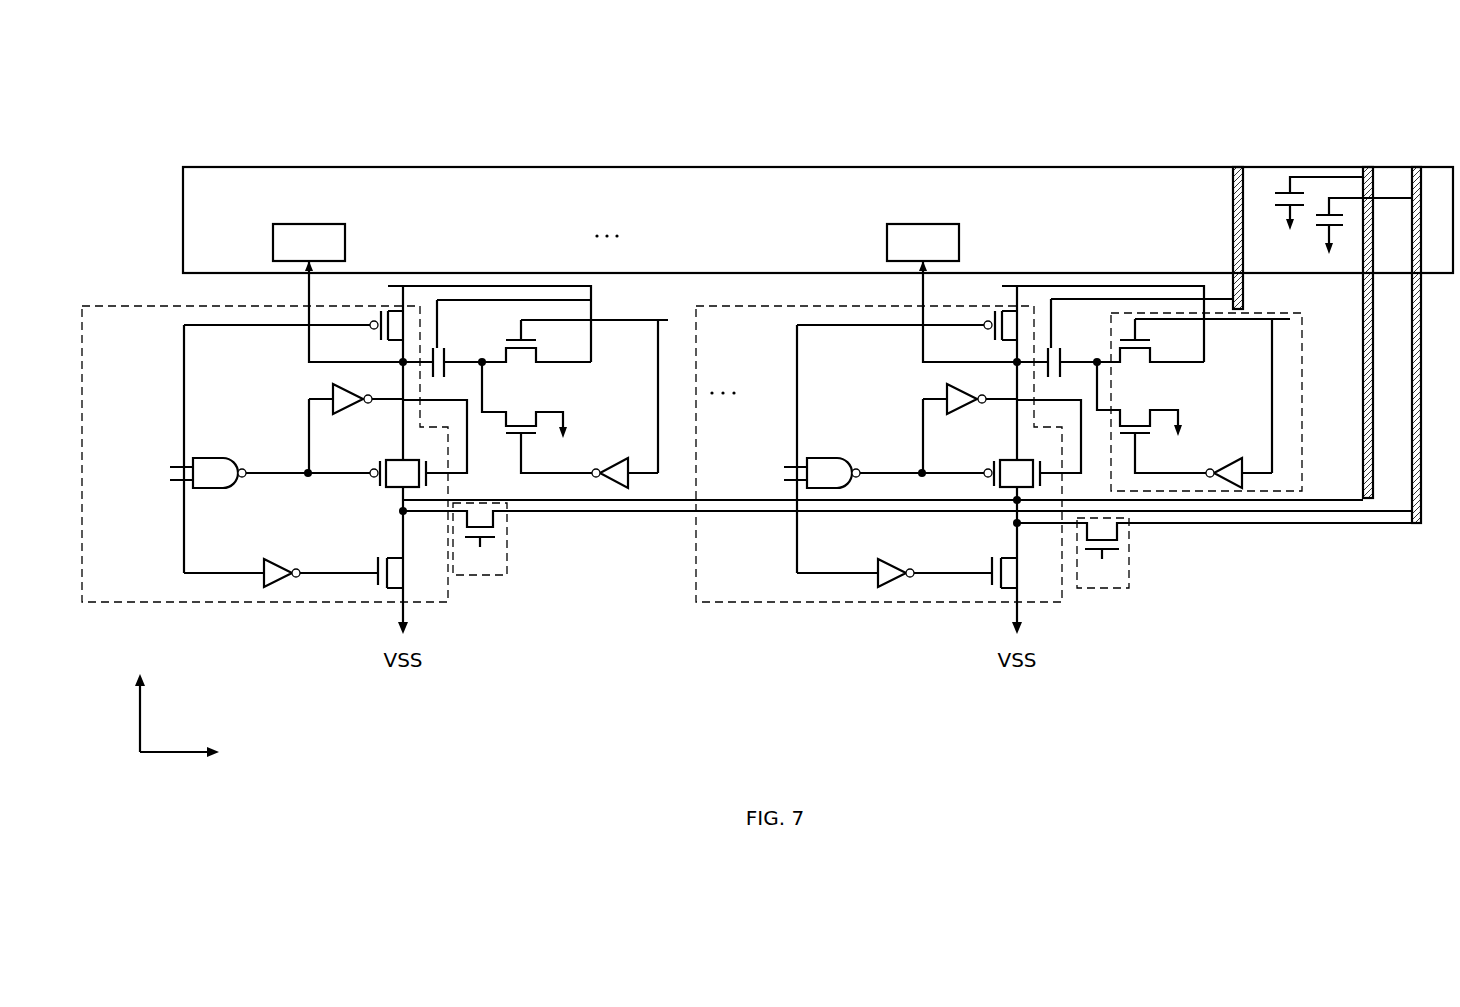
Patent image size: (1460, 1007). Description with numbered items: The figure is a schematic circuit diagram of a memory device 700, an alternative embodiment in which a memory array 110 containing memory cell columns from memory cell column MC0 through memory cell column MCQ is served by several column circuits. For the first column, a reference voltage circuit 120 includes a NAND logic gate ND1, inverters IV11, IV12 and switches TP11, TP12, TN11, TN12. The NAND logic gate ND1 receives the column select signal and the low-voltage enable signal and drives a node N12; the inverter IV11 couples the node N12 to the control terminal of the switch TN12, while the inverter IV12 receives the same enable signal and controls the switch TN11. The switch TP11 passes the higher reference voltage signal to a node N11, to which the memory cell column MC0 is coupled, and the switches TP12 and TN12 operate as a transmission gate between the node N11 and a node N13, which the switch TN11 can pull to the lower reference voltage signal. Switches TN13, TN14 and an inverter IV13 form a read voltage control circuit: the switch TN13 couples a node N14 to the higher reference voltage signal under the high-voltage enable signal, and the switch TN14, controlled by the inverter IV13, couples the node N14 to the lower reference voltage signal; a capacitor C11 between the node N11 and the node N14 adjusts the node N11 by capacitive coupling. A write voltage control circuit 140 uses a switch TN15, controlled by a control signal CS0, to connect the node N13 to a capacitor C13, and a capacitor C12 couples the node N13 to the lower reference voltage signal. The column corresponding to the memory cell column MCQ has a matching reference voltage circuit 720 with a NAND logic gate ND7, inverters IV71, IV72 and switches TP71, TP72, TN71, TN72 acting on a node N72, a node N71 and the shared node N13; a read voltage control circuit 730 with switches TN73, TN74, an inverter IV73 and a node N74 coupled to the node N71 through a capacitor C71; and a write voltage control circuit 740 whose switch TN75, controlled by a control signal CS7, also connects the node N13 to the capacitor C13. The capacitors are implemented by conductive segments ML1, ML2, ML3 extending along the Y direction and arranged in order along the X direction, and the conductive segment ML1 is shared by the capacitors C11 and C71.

The memory device 700 is at (166, 433).
The memory array 110 is at (182, 216).
The reference voltage circuit 120 is at (316, 604).
The write voltage control circuit 140 is at (483, 576).
The reference voltage circuit 720 is at (928, 604).
The read voltage control circuit 730 is at (1288, 492).
The write voltage control circuit 740 is at (1098, 590).
The memory cell column MC0 is at (309, 242).
The memory cell column MCQ is at (923, 242).
The switch TP11 is at (390, 342).
The switch TP12 is at (394, 490).
The switch TN11 is at (370, 572).
The switch TN12 is at (419, 490).
The switch TN13 is at (540, 352).
The switch TN14 is at (537, 417).
The switch TN15 is at (500, 532).
The inverter IV11 is at (333, 398).
The inverter IV12 is at (275, 588).
The inverter IV13 is at (603, 489).
The NAND logic gate ND1 is at (232, 489).
The capacitor C11 is at (442, 372).
The control signal CS0 is at (480, 539).
The node N11 is at (402, 366).
The node N12 is at (306, 470).
The node N13 is at (382, 521).
The node N14 is at (483, 360).
The switch TP71 is at (1004, 342).
The switch TP72 is at (1008, 490).
The switch TN71 is at (985, 572).
The switch TN72 is at (1018, 461).
The switch TN73 is at (1153, 352).
The switch TN74 is at (1151, 417).
The switch TN75 is at (1122, 536).
The inverter IV71 is at (947, 398).
The inverter IV72 is at (889, 588).
The inverter IV73 is at (1222, 489).
The NAND logic gate ND7 is at (848, 489).
The capacitor C71 is at (1057, 372).
The control signal CS7 is at (1103, 553).
The node N71 is at (1016, 366).
The node N72 is at (902, 461).
The node N74 is at (1096, 360).
The conductive segment ML1 is at (1240, 203).
The conductive segment ML2 is at (1376, 192).
The conductive segment ML3 is at (1422, 190).
The capacitor C12 is at (1320, 213).
The capacitor C13 is at (1272, 192).